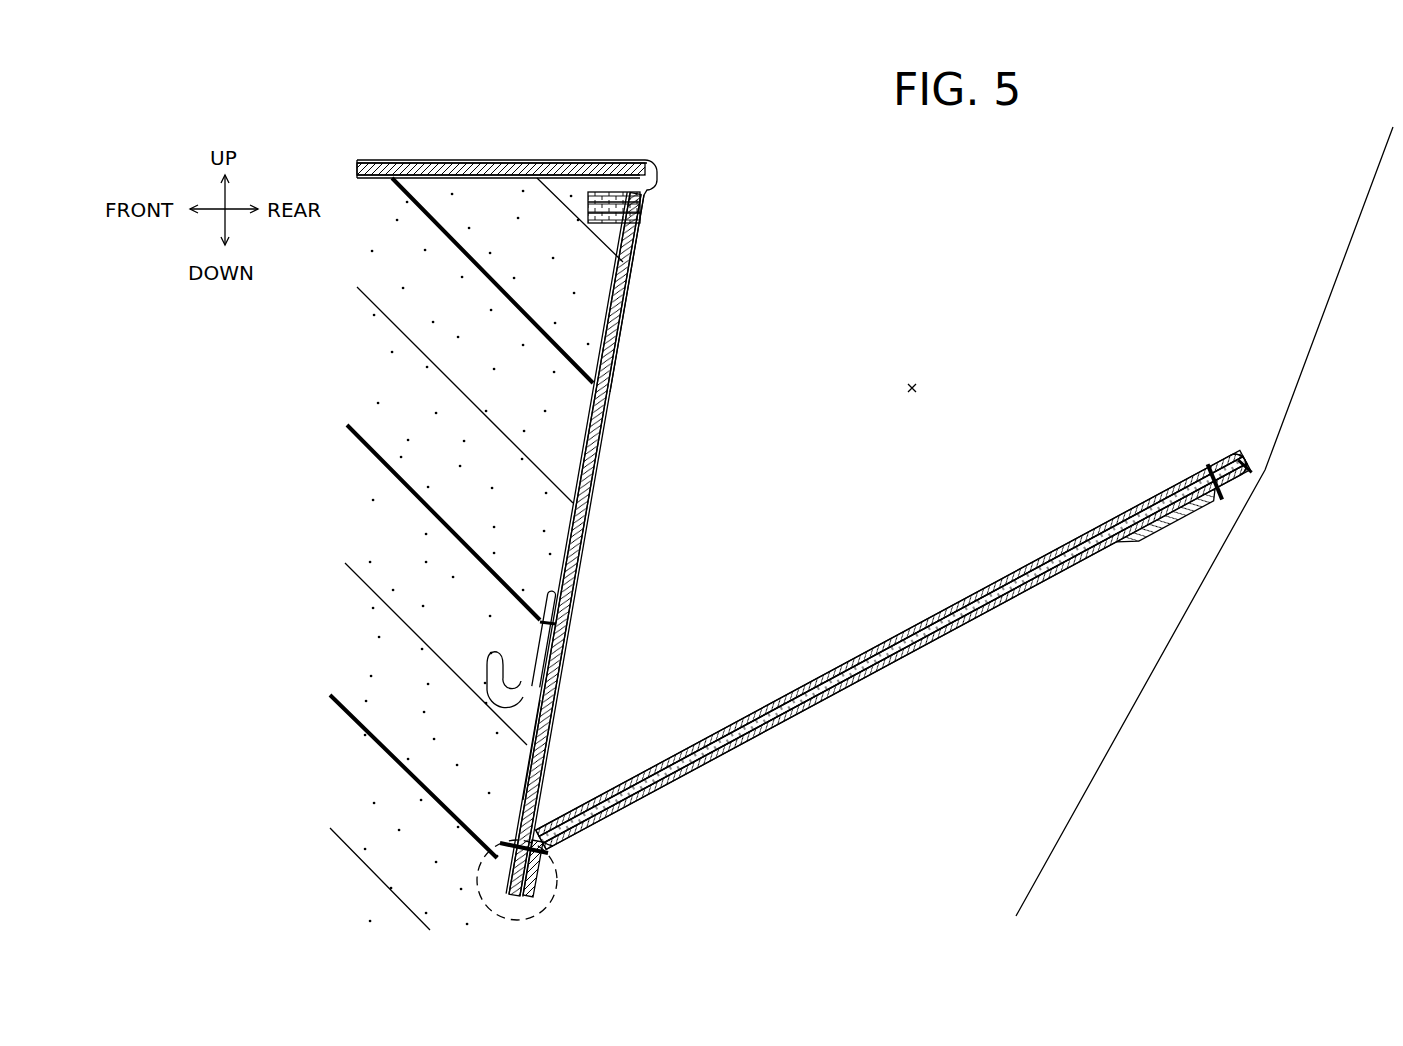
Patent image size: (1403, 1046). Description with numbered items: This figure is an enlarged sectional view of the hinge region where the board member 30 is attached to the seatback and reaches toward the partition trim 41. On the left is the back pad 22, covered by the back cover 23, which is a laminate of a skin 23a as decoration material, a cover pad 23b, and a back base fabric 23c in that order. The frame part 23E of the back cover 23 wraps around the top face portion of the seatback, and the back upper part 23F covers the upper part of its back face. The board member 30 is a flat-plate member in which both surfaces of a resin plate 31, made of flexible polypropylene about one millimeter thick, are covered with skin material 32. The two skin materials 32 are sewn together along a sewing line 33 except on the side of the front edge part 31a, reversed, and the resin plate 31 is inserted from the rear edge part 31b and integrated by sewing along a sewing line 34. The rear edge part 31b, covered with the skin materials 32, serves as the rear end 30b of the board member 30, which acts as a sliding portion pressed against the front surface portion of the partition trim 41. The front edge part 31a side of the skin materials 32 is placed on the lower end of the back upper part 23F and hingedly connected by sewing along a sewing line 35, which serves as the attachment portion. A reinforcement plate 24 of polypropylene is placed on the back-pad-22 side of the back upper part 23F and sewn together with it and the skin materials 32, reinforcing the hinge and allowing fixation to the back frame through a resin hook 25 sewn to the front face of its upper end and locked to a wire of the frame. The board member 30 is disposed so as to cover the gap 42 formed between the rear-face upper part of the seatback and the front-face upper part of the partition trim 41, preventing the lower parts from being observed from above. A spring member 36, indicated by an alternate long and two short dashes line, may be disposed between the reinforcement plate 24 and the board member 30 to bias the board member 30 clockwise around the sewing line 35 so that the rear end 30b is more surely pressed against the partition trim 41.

The back pad 22 is at (385, 522).
The back cover 23 is at (564, 488).
The skin 23a is at (410, 163).
The cover pad 23b is at (445, 170).
The back base fabric 23c is at (487, 177).
The frame part 23E is at (612, 162).
The back upper part 23F is at (628, 306).
The reinforcement plate 24 is at (520, 760).
The hook 25 is at (530, 656).
The board member 30 is at (939, 644).
The rear end 30b is at (1244, 466).
The resin plate 31 is at (893, 649).
The front edge part 31a is at (547, 850).
The rear edge part 31b is at (1240, 462).
The skin material 32 is at (893, 649).
The sewing line 33 is at (1215, 481).
The sewing line 34 is at (1167, 520).
The sewing line 35 is at (497, 862).
The spring member 36 is at (556, 906).
The partition trim 41 is at (1121, 728).
The gap 42 is at (912, 386).